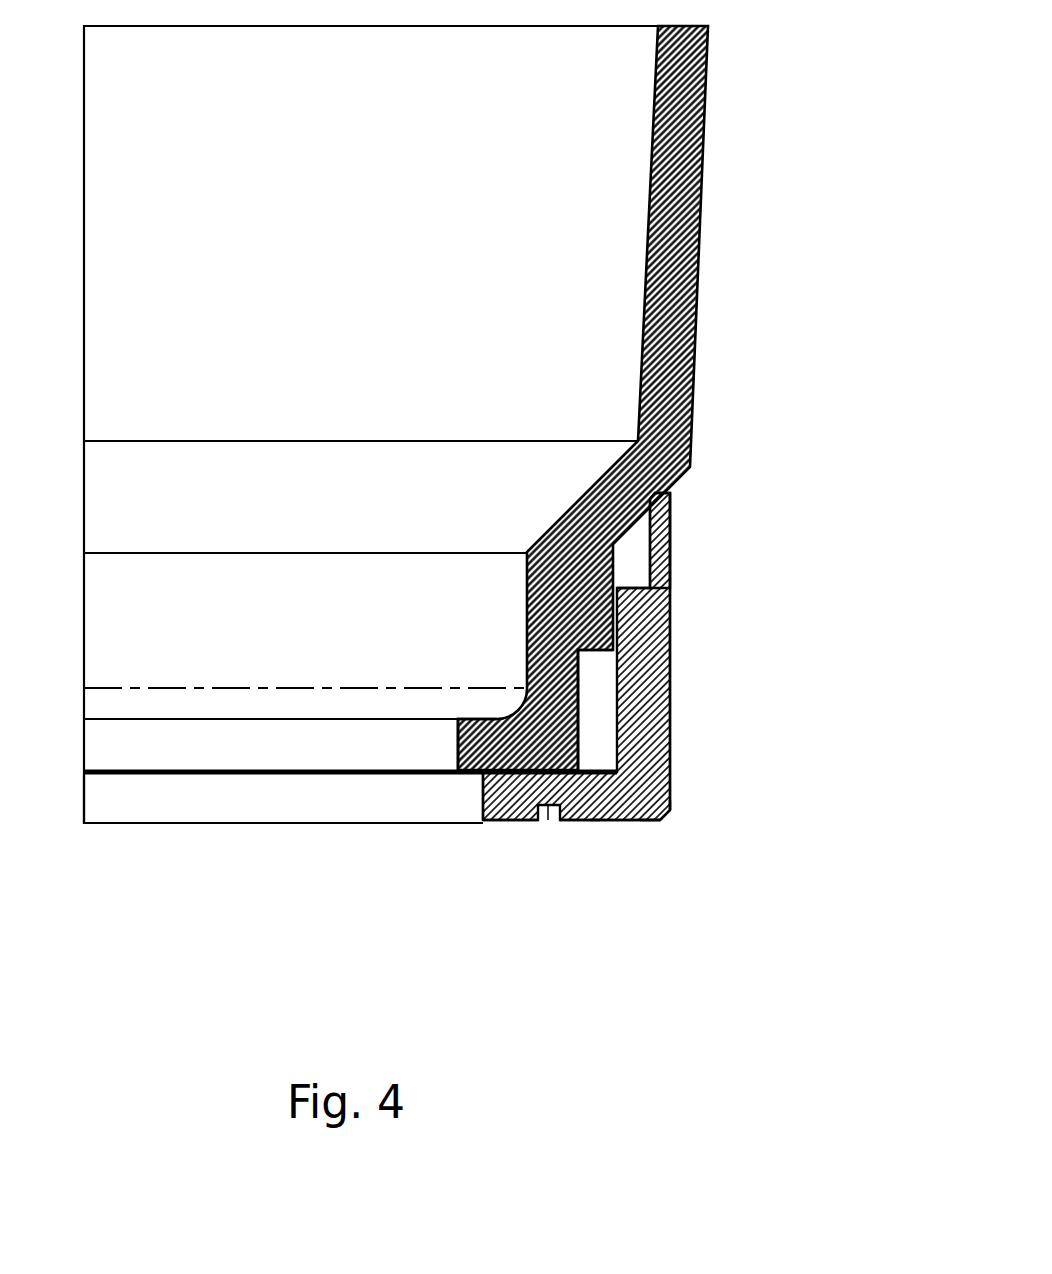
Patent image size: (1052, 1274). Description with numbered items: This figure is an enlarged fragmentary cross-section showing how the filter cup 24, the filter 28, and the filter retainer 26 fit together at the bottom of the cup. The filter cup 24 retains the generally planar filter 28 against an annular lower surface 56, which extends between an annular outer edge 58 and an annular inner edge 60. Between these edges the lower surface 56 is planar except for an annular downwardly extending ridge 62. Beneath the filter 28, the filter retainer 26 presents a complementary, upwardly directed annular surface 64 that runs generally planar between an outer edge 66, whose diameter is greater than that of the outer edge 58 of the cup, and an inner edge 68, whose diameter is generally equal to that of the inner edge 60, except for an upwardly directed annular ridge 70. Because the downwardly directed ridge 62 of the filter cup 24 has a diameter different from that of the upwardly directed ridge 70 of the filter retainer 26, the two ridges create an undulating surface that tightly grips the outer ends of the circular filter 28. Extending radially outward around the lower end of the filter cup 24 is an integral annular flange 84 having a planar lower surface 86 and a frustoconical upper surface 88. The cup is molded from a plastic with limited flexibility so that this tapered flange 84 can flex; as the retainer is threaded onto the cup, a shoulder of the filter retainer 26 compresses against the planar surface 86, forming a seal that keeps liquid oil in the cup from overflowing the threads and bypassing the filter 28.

The filter cup 24 is at (703, 195).
The filter retainer 26 is at (670, 608).
The filter 28 is at (172, 775).
The annular lower surface 56 is at (567, 820).
The annular outer edge 58 is at (578, 733).
The annular inner edge 60 is at (460, 750).
The downwardly extending annular ridge 62 is at (535, 820).
The upwardly directed annular surface 64 is at (607, 820).
The outer edge 66 is at (662, 817).
The inner edge 68 is at (483, 820).
The upwardly directed annular ridge 70 is at (417, 773).
The integral annular flange 84 is at (632, 575).
The planar lower surface 86 is at (668, 625).
The frustoconical upper surface 88 is at (668, 527).